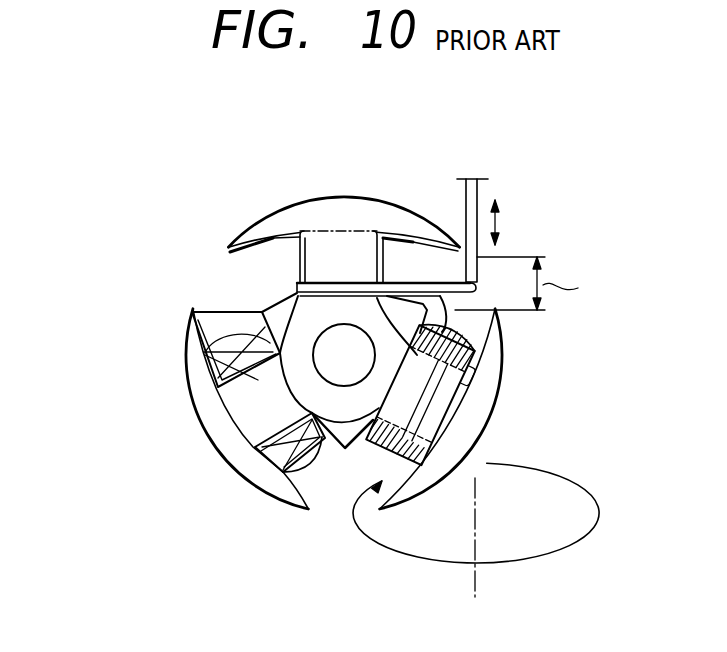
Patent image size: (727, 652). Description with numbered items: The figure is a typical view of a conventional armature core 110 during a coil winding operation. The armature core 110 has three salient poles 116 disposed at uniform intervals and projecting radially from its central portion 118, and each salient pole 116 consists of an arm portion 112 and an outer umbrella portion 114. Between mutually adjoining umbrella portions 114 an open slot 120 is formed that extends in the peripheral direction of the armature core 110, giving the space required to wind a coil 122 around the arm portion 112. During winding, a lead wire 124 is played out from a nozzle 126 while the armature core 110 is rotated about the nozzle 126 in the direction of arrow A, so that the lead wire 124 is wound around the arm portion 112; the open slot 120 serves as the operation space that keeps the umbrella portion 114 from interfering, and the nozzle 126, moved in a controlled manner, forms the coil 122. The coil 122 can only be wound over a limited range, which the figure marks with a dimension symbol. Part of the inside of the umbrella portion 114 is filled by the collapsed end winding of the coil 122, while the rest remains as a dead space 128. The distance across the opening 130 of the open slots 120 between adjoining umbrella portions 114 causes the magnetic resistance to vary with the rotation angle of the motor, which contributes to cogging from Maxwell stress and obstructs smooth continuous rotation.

The armature core 110 is at (224, 198).
The arm portion 112 is at (339, 258).
The umbrella portion 114 is at (415, 216).
The salient pole 116 is at (297, 202).
The central portion 118 is at (304, 332).
The open slot 120 is at (430, 268).
The coil 122 is at (297, 286).
The lead wire 124 is at (490, 318).
The nozzle 126 is at (480, 280).
The dead space 128 is at (478, 383).
The opening 130 is at (223, 267).
The direction of rotation arrow A is at (513, 560).